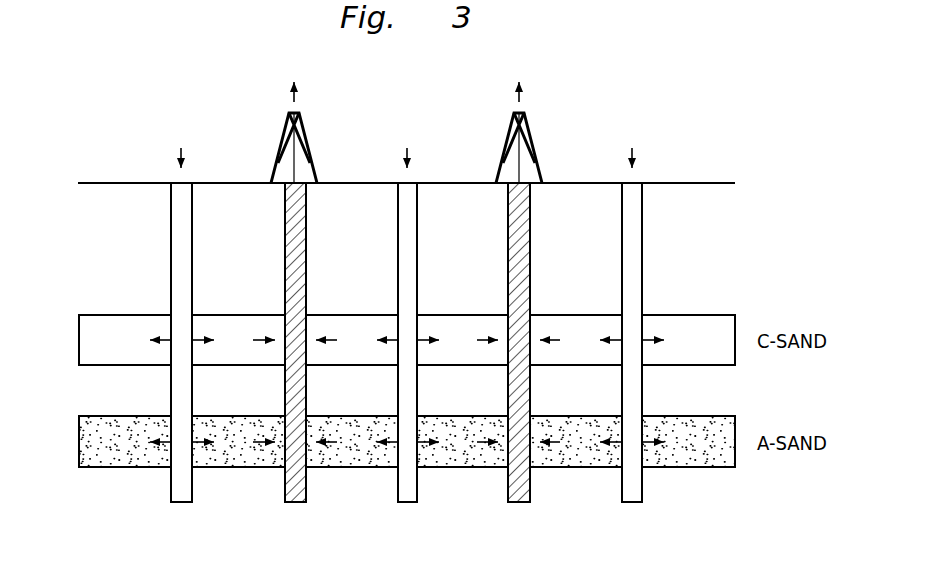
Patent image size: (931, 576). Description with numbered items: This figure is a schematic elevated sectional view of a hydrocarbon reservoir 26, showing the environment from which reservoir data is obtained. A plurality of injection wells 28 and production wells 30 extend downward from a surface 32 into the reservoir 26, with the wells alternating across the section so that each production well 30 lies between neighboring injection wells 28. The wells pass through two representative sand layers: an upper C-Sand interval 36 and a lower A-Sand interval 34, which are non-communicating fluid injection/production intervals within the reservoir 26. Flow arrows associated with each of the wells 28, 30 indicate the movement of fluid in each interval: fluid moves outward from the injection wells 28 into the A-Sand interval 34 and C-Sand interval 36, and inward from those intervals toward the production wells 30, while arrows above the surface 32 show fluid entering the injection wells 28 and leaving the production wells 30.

The hydrocarbon reservoir 26 is at (64, 66).
The injection well 28 is at (171, 246).
The production well 30 is at (285, 246).
The surface 32 is at (110, 183).
The A-Sand interval 34 is at (79, 445).
The C-Sand interval 36 is at (79, 342).